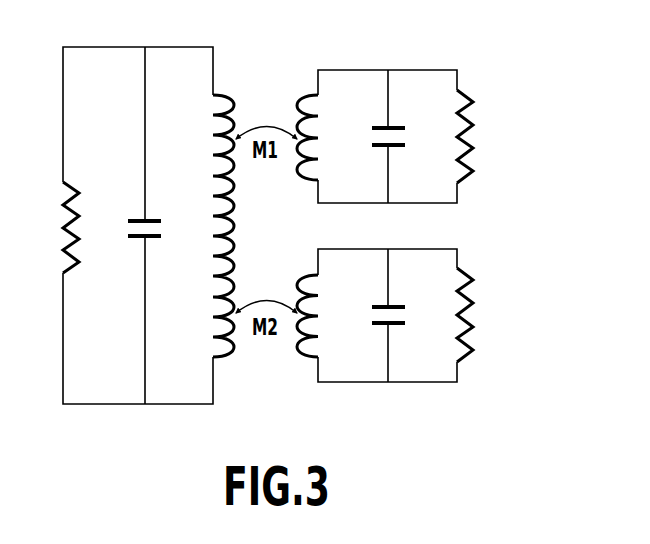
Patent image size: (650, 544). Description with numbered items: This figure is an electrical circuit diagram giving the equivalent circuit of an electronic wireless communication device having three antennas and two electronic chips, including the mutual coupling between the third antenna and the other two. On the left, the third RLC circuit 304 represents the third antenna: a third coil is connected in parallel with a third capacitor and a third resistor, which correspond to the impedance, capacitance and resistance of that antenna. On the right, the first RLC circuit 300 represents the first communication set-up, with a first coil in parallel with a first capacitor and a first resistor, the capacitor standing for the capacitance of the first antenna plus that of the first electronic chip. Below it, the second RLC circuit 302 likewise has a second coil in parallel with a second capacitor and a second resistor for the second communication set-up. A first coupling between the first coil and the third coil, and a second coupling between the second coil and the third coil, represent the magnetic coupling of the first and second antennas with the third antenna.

The first RLC circuit 300 is at (432, 68).
The second RLC circuit 302 is at (432, 247).
The third RLC circuit 304 is at (112, 45).